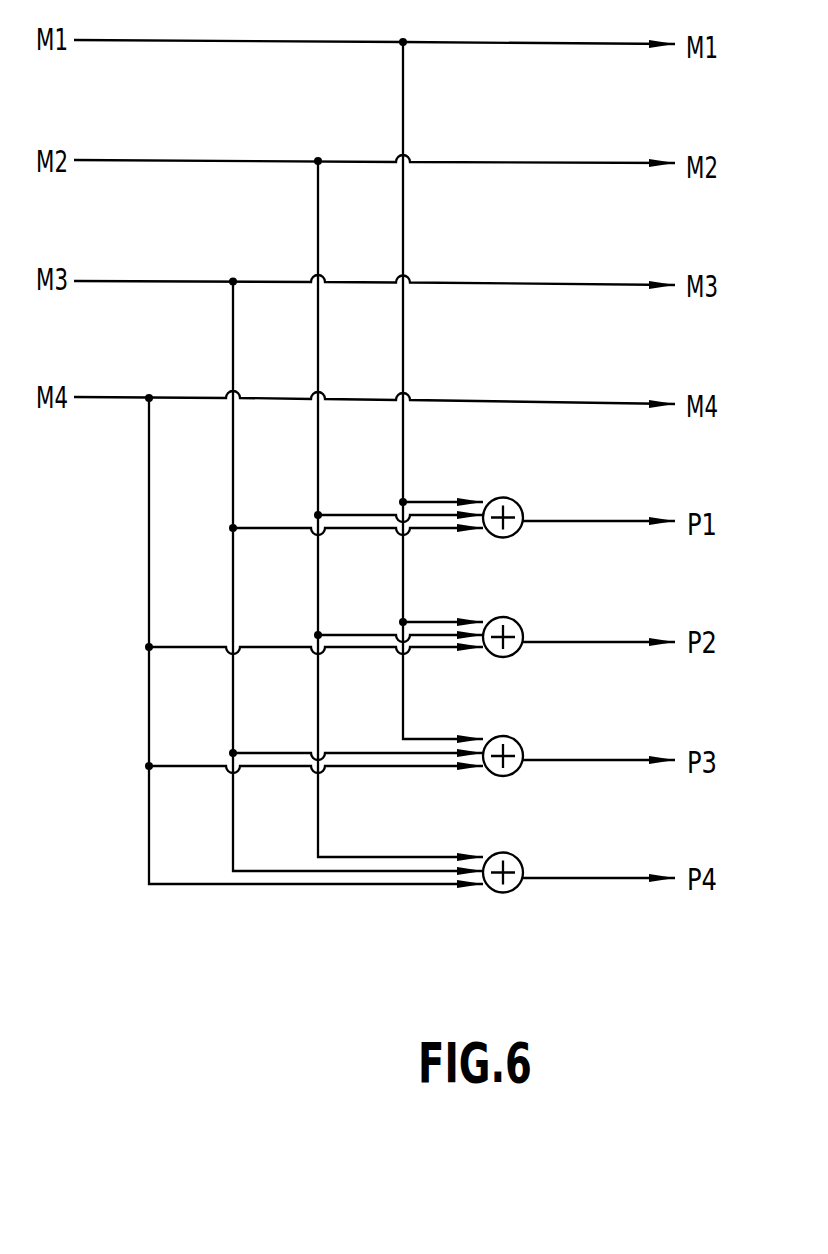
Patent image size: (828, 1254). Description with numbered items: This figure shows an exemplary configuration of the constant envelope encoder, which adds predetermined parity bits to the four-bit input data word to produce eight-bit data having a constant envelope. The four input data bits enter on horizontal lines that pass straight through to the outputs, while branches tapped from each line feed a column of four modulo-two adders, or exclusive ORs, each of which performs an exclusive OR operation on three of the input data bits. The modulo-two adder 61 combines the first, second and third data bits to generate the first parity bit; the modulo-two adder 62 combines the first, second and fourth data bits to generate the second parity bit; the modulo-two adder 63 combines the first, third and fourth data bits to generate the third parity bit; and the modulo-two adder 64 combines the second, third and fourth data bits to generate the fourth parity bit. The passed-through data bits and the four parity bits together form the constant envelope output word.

The modulo-2 adder 61 is at (508, 497).
The modulo-2 adder 62 is at (508, 617).
The modulo-2 adder 63 is at (508, 736).
The modulo-2 adder 64 is at (508, 852).